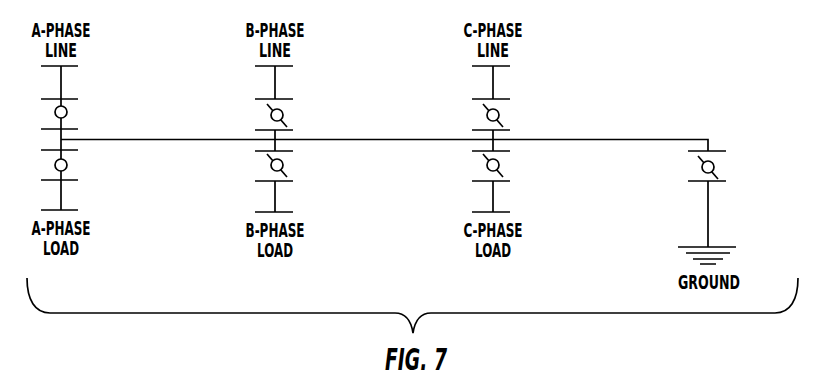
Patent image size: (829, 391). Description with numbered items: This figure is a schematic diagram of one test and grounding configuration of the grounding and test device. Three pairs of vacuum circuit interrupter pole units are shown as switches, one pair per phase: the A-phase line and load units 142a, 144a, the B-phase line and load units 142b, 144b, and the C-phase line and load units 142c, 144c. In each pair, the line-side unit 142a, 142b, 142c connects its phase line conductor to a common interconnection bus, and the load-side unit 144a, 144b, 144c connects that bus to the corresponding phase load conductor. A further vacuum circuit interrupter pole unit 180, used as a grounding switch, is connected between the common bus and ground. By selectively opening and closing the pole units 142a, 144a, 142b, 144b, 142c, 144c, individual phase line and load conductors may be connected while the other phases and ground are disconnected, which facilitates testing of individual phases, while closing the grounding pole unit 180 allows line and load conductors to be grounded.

The vacuum circuit interrupter pole unit 142a is at (72, 114).
The vacuum circuit interrupter pole unit 144a is at (72, 166).
The vacuum circuit interrupter pole unit 142b is at (297, 115).
The vacuum circuit interrupter pole unit 144b is at (297, 168).
The vacuum circuit interrupter pole unit 142c is at (513, 115).
The vacuum circuit interrupter pole unit 144c is at (513, 168).
The grounding vacuum circuit interrupter pole unit 180 is at (726, 168).